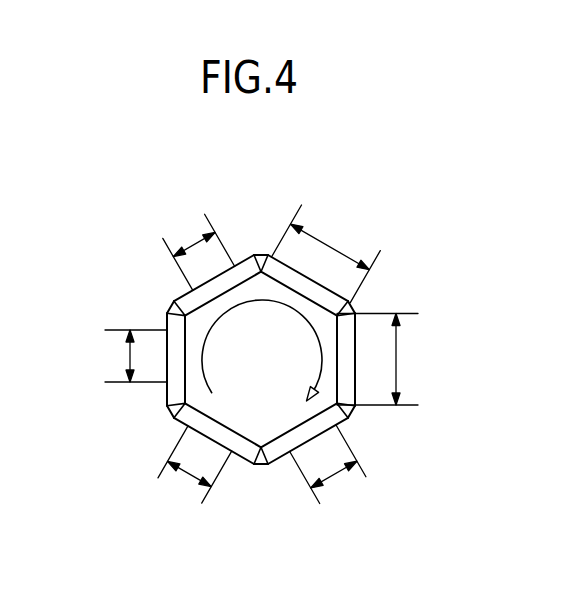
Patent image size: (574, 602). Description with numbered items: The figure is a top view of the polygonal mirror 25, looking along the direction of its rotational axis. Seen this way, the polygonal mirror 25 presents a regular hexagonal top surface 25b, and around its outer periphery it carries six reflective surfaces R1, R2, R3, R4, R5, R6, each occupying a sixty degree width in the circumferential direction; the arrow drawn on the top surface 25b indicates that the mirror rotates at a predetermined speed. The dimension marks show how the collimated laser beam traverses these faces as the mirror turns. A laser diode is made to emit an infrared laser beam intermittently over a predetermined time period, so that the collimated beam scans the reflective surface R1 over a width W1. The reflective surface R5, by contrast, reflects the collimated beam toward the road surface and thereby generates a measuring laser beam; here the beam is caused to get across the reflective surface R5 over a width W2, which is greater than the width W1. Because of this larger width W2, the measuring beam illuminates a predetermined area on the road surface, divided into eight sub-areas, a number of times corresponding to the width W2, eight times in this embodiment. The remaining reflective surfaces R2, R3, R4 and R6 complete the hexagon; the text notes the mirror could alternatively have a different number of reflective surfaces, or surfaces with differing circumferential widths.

The polygonal mirror 25 is at (242, 362).
The top surface 25b is at (282, 334).
The reflective surface R1 is at (245, 267).
The reflective surface R2 is at (168, 392).
The reflective surface R3 is at (198, 420).
The reflective surface R4 is at (277, 448).
The reflective surface R5 is at (347, 390).
The reflective surface R6 is at (332, 305).
The width W1 is at (225, 361).
The width W2 is at (355, 305).